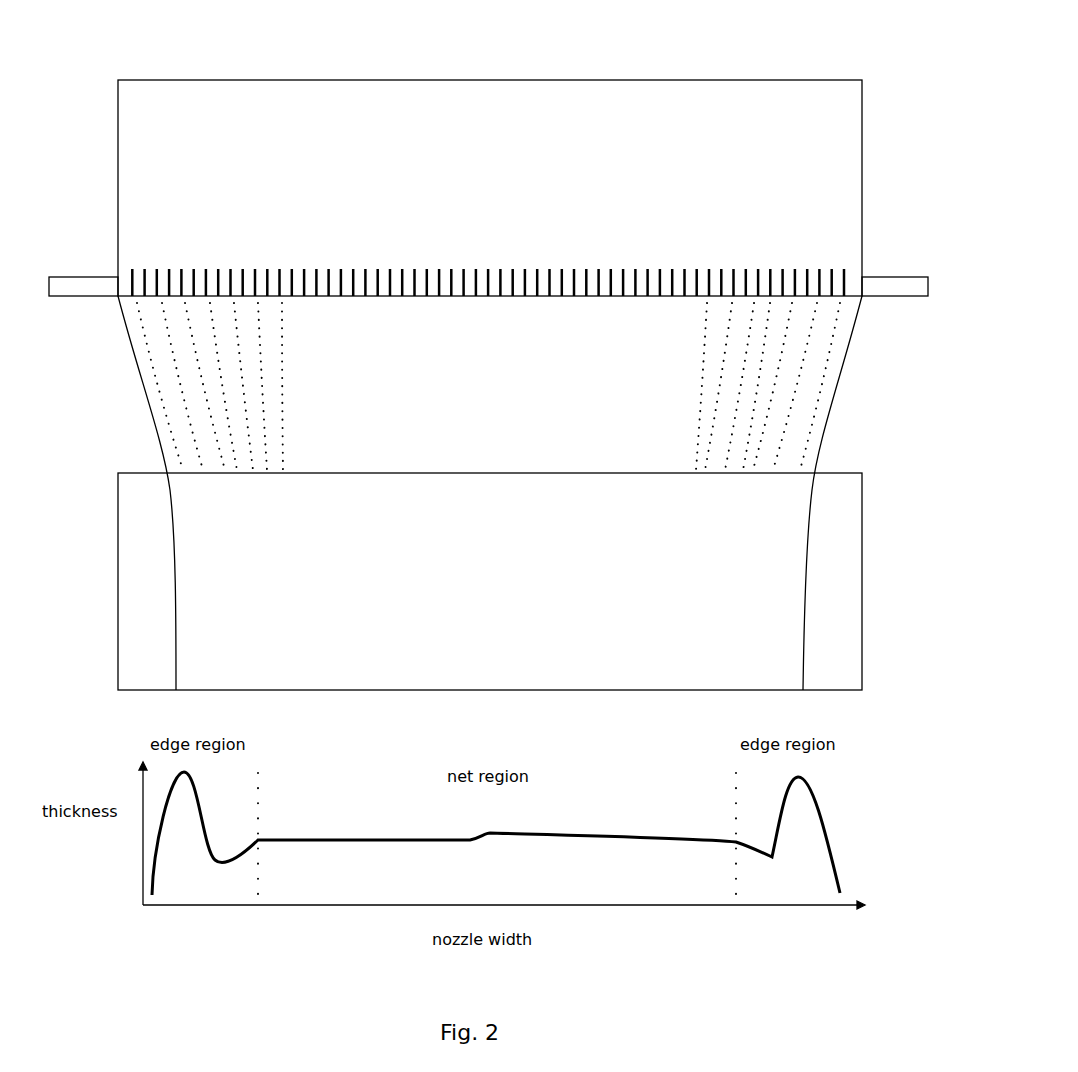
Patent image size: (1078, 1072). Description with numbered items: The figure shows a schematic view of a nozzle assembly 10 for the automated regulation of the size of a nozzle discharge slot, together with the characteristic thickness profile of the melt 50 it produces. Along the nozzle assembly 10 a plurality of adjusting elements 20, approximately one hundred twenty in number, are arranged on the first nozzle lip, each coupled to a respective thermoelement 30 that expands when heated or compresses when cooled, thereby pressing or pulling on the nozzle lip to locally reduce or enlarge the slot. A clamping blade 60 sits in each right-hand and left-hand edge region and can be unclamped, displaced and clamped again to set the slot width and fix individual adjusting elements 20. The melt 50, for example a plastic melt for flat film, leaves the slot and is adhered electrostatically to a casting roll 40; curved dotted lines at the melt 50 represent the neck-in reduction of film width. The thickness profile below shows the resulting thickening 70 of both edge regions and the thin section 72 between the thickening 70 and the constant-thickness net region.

The nozzle assembly 10 is at (310, 128).
The adjusting elements 20 is at (795, 268).
The thermoelement 30 is at (488, 246).
The casting roll 40 is at (839, 580).
The melt 50 is at (808, 430).
The clamping blade 60 is at (64, 277).
The thickening 70 is at (817, 788).
The thin section 72 is at (772, 857).